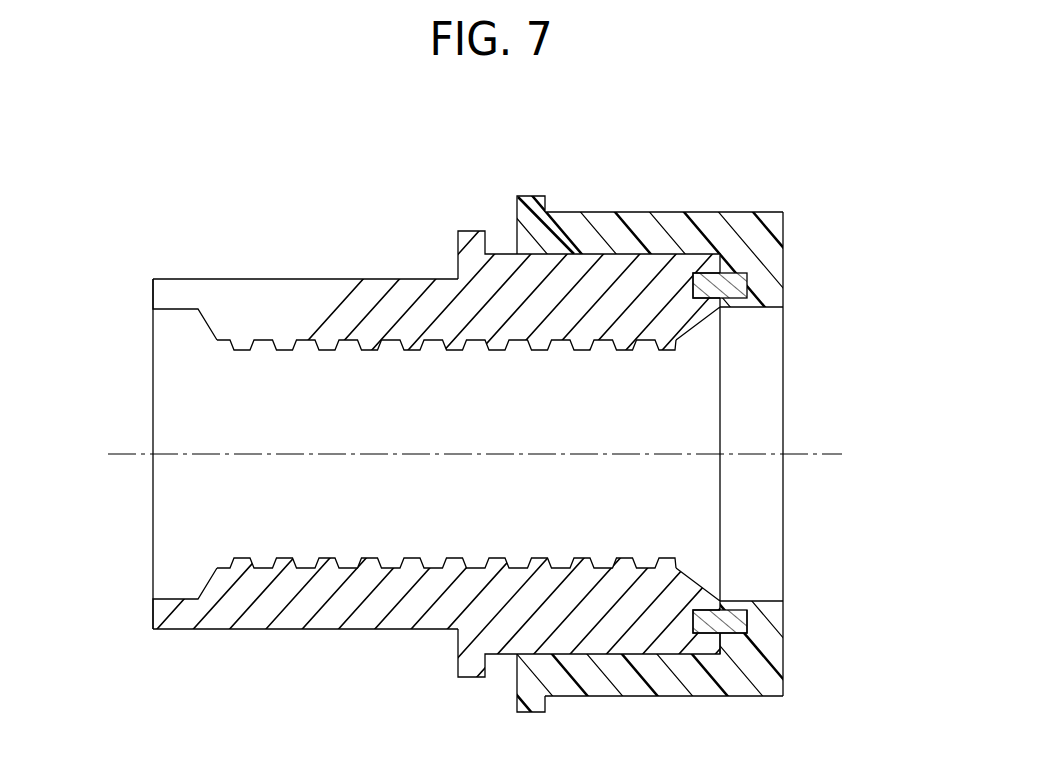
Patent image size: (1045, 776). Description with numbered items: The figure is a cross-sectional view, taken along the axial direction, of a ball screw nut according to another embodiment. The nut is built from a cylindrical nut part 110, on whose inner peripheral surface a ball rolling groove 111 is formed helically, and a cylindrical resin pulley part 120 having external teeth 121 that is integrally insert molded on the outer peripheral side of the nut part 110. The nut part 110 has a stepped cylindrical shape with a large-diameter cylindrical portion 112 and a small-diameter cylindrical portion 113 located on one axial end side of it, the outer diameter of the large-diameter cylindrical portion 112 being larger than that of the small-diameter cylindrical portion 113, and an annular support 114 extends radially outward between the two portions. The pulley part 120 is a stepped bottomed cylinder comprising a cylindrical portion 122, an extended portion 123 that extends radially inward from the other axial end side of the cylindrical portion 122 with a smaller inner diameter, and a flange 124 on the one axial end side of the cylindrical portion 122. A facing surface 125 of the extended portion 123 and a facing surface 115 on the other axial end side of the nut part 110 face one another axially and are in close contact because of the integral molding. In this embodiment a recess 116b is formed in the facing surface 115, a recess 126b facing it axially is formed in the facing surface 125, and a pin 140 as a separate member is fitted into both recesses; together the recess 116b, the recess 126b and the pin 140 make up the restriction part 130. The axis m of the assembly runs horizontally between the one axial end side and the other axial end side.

The nut part 110 is at (503, 367).
The ball rolling groove 111 is at (395, 350).
The large-diameter cylindrical portion 112 is at (600, 282).
The small-diameter cylindrical portion 113 is at (308, 285).
The annular support 114 is at (470, 230).
The facing surface 115 is at (725, 265).
The recess 116b is at (757, 312).
The pulley part 120 is at (807, 217).
The external teeth 121 is at (607, 212).
The cylindrical portion 122 is at (678, 227).
The extended portion 123 is at (775, 652).
The flange 124 is at (530, 193).
The facing surface 125 is at (712, 647).
The recess 126b is at (707, 633).
The restriction part 130 is at (748, 622).
The pin 140 is at (718, 312).
The axis m is at (822, 452).